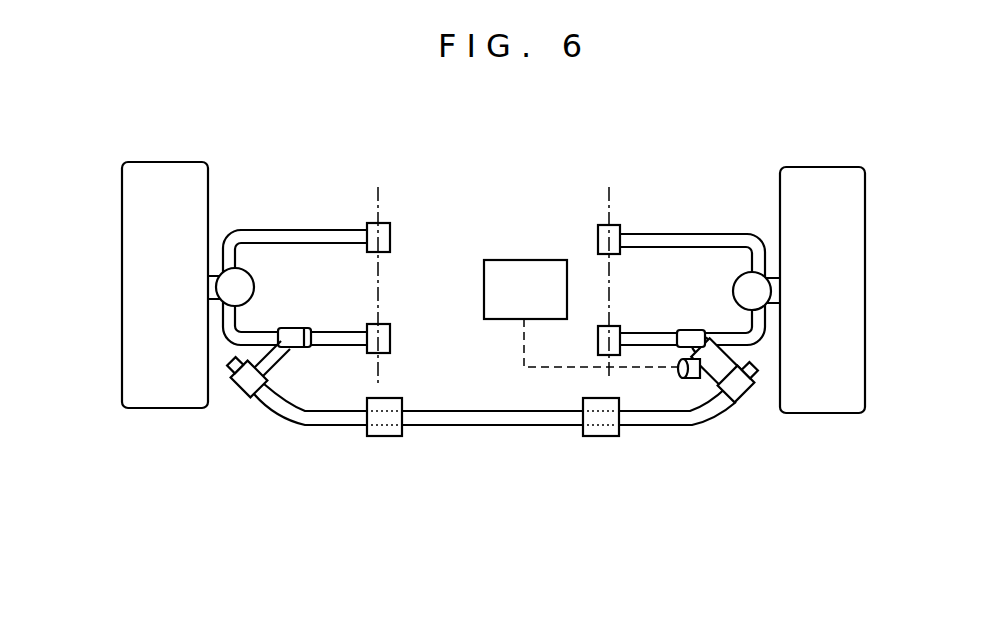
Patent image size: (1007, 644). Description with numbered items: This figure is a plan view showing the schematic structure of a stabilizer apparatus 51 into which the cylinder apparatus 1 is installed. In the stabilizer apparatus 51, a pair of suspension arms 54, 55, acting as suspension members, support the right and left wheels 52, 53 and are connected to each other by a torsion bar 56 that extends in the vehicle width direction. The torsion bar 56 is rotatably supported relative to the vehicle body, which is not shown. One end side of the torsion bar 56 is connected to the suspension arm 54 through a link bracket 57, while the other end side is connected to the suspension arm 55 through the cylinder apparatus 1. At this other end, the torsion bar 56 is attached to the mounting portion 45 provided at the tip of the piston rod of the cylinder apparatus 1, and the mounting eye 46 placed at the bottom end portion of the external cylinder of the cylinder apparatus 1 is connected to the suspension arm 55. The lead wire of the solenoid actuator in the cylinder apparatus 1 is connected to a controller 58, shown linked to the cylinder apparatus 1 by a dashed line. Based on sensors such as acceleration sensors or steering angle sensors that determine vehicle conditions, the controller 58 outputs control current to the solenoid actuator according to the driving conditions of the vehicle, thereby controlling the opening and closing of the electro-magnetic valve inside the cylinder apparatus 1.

The cylinder apparatus 1 is at (703, 378).
The mounting portion 45 is at (750, 392).
The mounting eye 46 is at (687, 332).
The stabilizer apparatus 51 is at (517, 473).
The wheel 52 is at (137, 222).
The wheel 53 is at (832, 247).
The suspension arm 54 is at (282, 240).
The suspension arm 55 is at (700, 240).
The torsion bar 56 is at (440, 425).
The link bracket 57 is at (275, 363).
The controller 58 is at (512, 278).